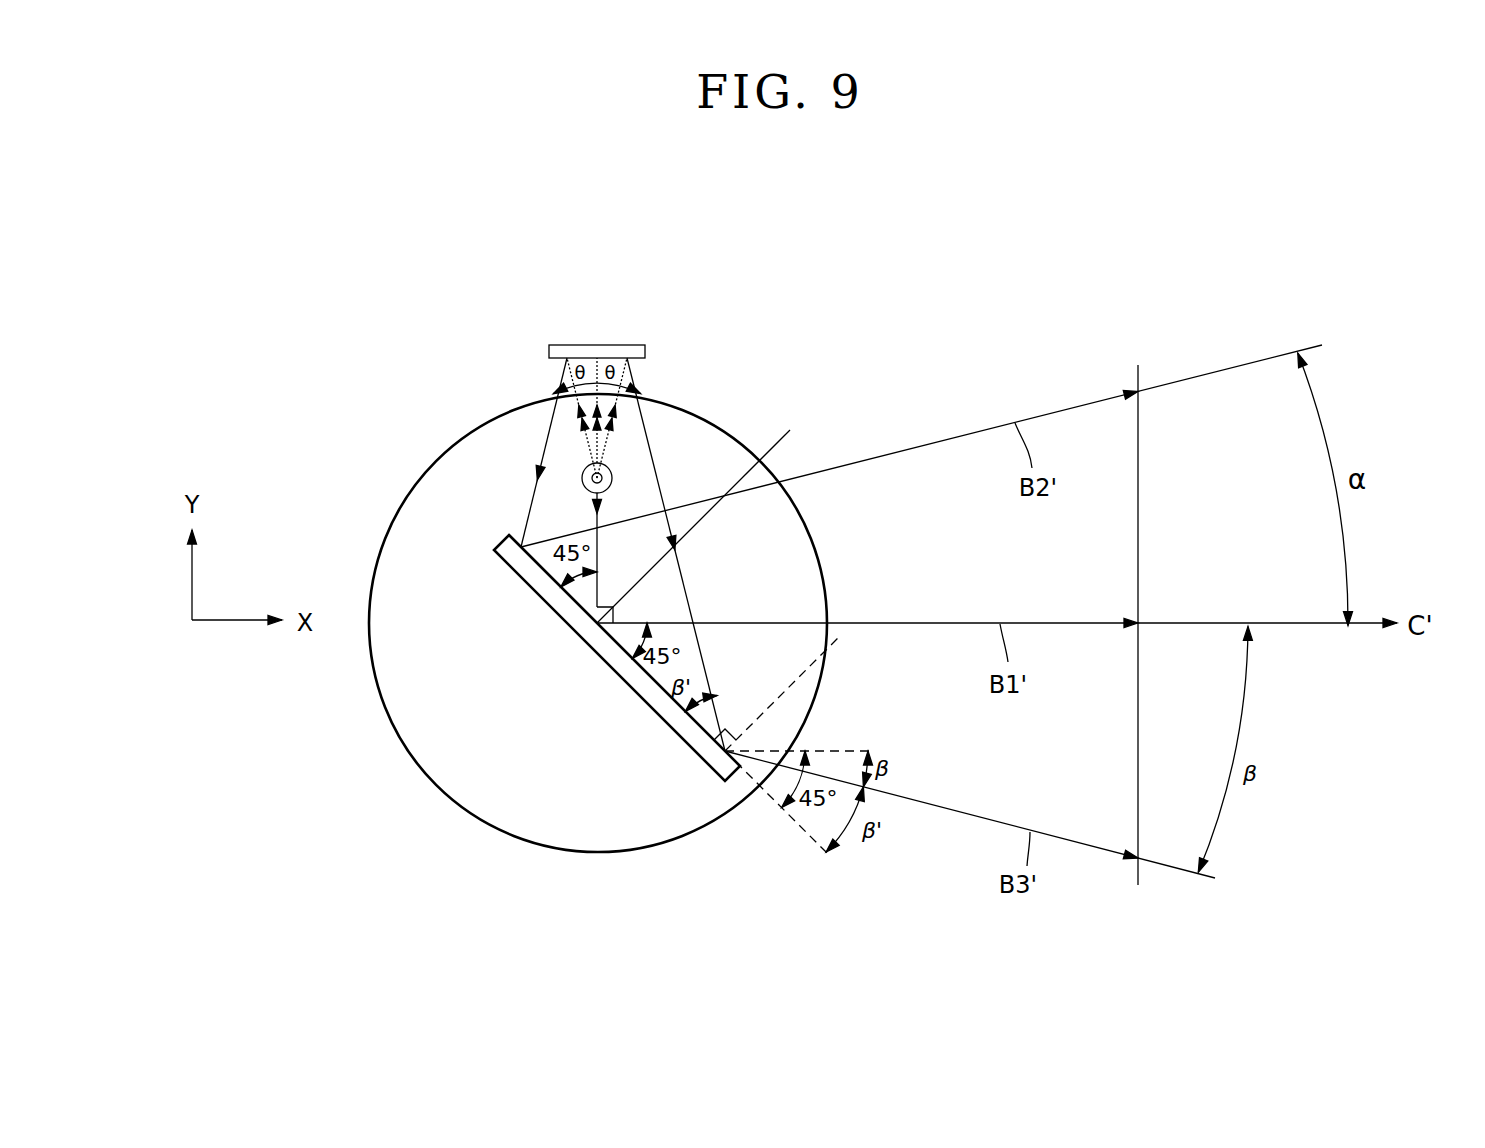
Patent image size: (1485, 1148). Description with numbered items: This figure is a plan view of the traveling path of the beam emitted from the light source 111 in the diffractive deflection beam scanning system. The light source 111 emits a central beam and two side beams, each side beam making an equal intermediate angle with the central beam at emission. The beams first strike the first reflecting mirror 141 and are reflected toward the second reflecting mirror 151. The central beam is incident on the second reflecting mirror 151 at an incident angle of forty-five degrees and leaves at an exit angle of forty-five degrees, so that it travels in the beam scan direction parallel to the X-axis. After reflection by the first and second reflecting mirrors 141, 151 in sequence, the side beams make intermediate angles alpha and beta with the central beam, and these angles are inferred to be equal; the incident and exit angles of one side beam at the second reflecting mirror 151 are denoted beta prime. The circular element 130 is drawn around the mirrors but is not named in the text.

The first reflecting mirror 141 is at (568, 345).
The light source 111 is at (612, 478).
The second reflecting mirror 151 is at (602, 660).
The rotating body 130 is at (535, 822).